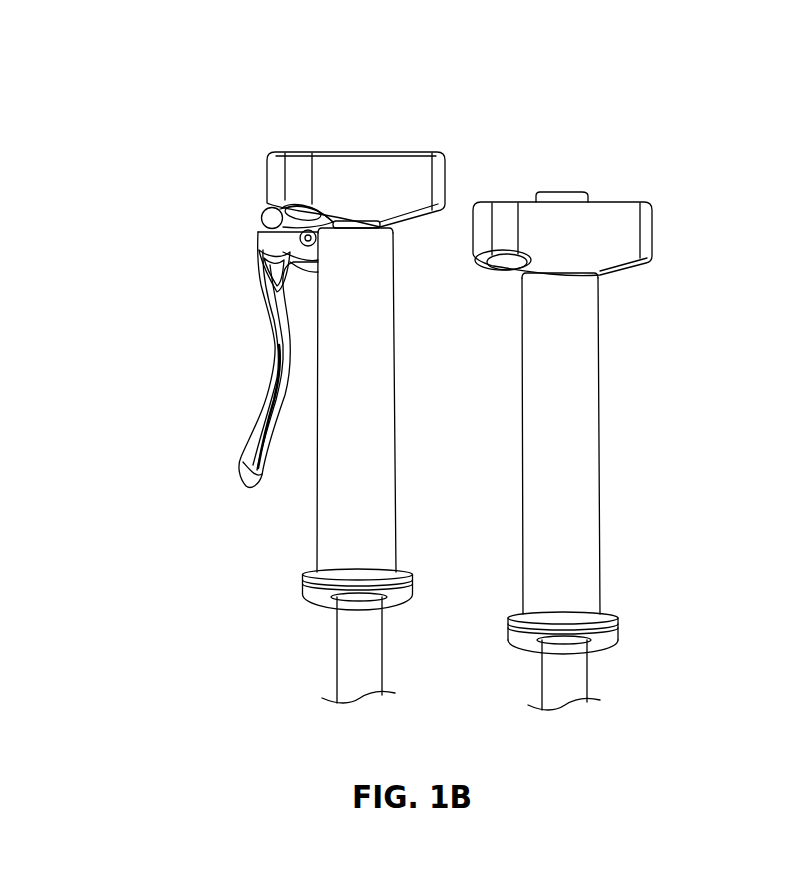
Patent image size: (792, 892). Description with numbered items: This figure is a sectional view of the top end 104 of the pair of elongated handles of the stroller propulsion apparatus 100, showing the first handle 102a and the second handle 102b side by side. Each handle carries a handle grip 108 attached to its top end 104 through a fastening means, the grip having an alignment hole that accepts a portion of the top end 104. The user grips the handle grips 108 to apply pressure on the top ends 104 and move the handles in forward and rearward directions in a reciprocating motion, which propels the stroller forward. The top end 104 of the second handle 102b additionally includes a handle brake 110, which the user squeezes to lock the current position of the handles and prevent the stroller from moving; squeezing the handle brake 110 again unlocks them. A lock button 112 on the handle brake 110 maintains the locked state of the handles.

The stroller propulsion apparatus 100 is at (252, 75).
The first handle 102a is at (578, 681).
The second handle 102b is at (342, 645).
The top end 104 is at (357, 229).
The handle grip 108 is at (547, 213).
The handle brake 110 is at (273, 318).
The lock button 112 is at (262, 214).